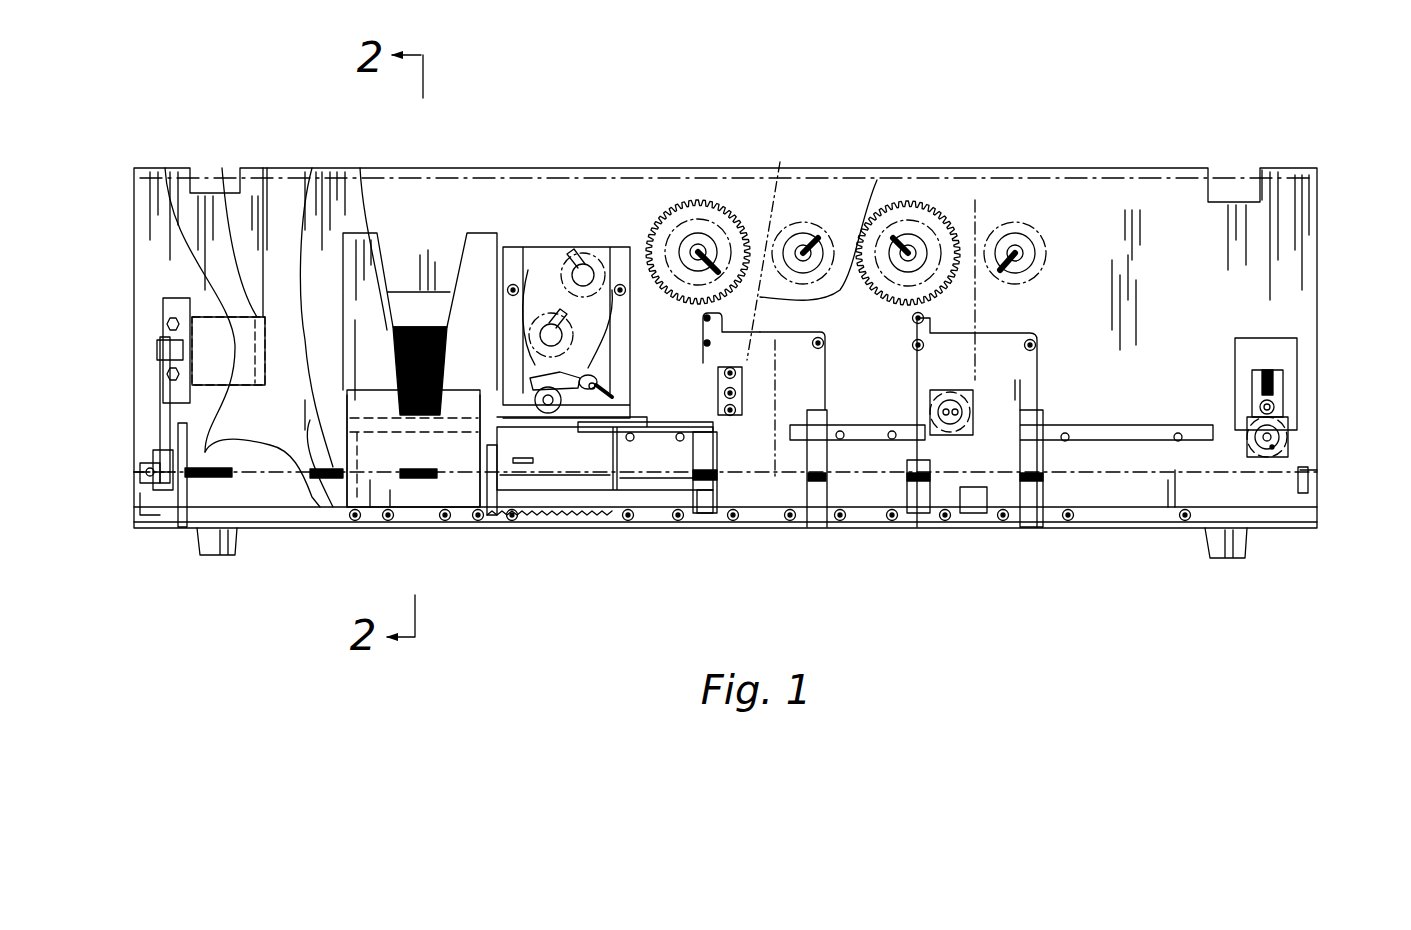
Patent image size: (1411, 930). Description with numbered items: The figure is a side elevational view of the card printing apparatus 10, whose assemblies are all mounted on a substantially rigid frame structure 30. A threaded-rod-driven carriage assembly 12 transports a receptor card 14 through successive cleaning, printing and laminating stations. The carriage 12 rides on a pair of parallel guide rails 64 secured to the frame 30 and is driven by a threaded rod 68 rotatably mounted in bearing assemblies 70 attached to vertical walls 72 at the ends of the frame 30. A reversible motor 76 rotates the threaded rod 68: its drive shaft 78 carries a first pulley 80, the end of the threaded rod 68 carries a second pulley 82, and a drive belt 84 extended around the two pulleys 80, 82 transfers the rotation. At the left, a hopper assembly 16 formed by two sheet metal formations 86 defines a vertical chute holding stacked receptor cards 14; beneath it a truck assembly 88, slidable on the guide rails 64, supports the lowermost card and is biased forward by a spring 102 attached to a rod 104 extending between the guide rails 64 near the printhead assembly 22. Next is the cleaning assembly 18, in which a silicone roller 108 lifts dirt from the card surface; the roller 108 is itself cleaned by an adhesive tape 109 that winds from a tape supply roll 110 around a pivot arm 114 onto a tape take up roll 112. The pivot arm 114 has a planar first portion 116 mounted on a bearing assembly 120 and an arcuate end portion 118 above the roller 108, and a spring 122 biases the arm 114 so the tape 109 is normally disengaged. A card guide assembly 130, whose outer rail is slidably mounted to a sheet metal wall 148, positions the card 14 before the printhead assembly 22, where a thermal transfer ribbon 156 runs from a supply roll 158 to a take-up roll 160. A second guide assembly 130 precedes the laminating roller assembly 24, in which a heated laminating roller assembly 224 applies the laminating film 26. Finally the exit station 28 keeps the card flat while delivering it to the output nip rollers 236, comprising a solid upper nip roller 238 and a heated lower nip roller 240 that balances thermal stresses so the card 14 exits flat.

The card printing apparatus 10 is at (1174, 153).
The carriage assembly 12 is at (558, 493).
The receptor card 14 is at (639, 406).
The hopper assembly 16 is at (486, 232).
The cleaning assembly 18 is at (595, 240).
The printhead assembly 22 is at (812, 230).
The laminating roller assembly 24 is at (1012, 341).
The laminating film 26 is at (975, 330).
The exit station 28 is at (1137, 422).
The frame structure 30 is at (1297, 177).
The guide rails 64 is at (253, 497).
The threaded rod 68 is at (309, 168).
The bearing assemblies 70 is at (1308, 478).
The vertical walls 72 is at (222, 168).
The reversible motor 76 is at (264, 168).
The drive shaft 78 is at (167, 170).
The first pulley 80 is at (158, 340).
The second pulley 82 is at (148, 465).
The drive belt 84 is at (160, 392).
The sheet metal formations 86 is at (360, 168).
The truck assembly 88 is at (387, 493).
The spring 102 is at (543, 520).
The rod 104 is at (710, 517).
The silicone roller 108 is at (490, 445).
The adhesive tape 109 is at (625, 280).
The tape supply roll 110 is at (549, 322).
The tape take up roll 112 is at (607, 273).
The pivot arm 114 is at (565, 397).
The first portion 116 is at (585, 385).
The end portion 118 is at (545, 330).
The bearing assembly 120 is at (580, 370).
The spring 122 is at (592, 390).
The card guide assembly 130 is at (744, 320).
The sheet metal wall 148 is at (617, 440).
The thermal transfer ribbon 156 is at (824, 300).
The supply roll 158 is at (712, 218).
The take-up roll 160 is at (822, 295).
The heated laminating roller assembly 224 is at (960, 432).
The output nip rollers 236 is at (1290, 418).
The upper nip roller 238 is at (1274, 405).
The lower nip roller 240 is at (1283, 434).